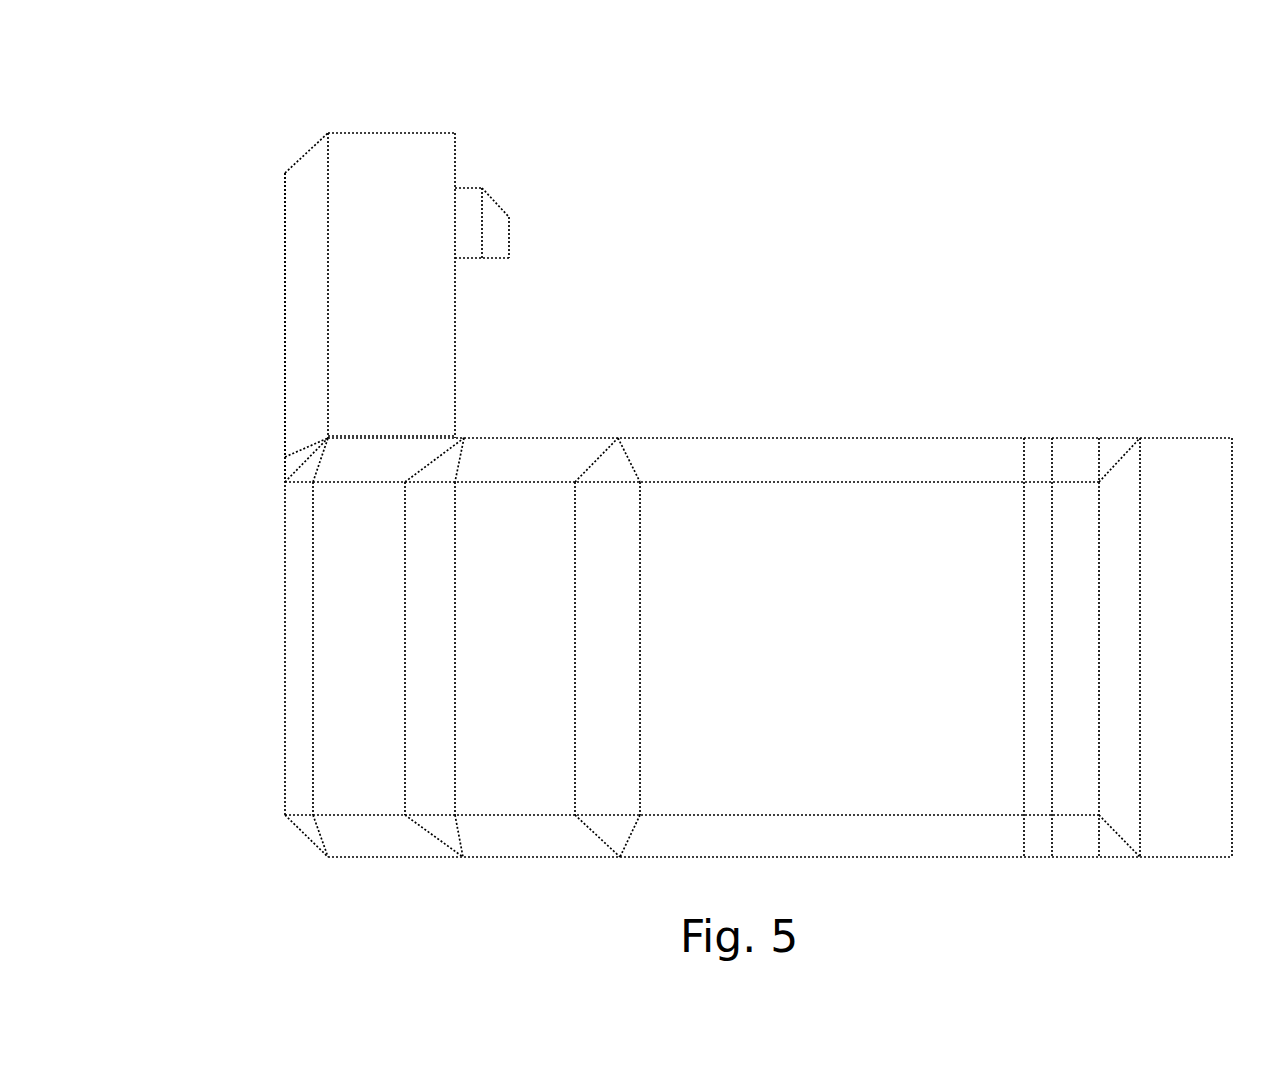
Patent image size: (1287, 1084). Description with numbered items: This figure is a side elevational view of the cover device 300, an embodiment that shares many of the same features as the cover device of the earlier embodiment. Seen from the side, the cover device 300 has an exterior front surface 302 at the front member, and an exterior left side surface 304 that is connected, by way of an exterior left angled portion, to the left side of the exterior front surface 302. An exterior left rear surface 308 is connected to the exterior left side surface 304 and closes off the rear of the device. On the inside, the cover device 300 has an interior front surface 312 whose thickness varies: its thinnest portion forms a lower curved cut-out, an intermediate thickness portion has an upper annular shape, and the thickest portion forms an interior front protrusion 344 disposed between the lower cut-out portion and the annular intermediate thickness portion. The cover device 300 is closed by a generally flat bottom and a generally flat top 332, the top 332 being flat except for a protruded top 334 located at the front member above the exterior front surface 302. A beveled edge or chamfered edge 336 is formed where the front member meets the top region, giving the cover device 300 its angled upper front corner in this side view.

The cover device 300 is at (250, 72).
The exterior front surface 302 is at (272, 560).
The exterior left side surface 304 is at (912, 688).
The exterior left rear surface 308 is at (1246, 498).
The interior front surface 312 is at (468, 356).
The generally flat top 332 is at (838, 425).
The protruded top 334 is at (415, 120).
The beveled edge or chamfered edge 336 is at (288, 150).
The interior front protrusion 344 is at (490, 232).